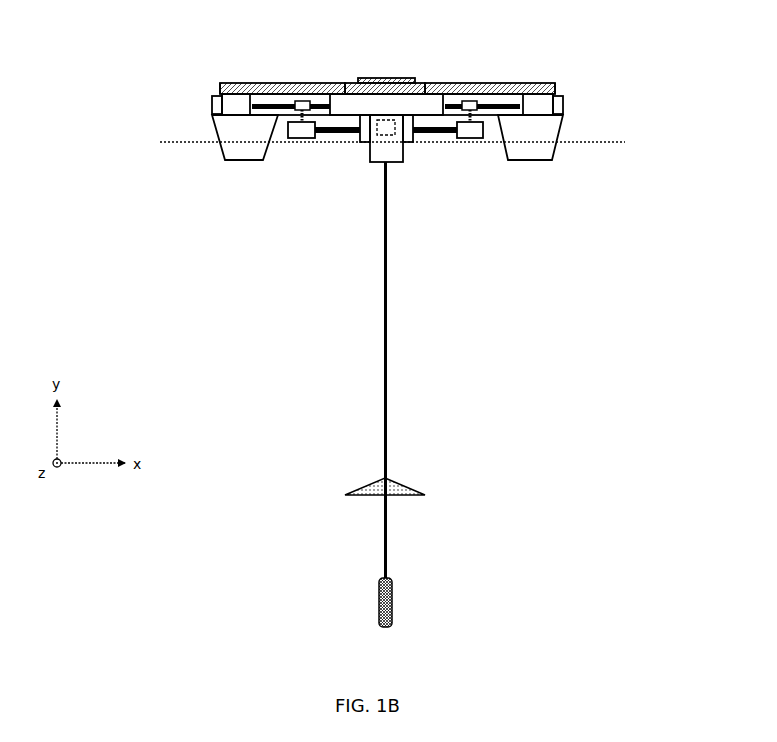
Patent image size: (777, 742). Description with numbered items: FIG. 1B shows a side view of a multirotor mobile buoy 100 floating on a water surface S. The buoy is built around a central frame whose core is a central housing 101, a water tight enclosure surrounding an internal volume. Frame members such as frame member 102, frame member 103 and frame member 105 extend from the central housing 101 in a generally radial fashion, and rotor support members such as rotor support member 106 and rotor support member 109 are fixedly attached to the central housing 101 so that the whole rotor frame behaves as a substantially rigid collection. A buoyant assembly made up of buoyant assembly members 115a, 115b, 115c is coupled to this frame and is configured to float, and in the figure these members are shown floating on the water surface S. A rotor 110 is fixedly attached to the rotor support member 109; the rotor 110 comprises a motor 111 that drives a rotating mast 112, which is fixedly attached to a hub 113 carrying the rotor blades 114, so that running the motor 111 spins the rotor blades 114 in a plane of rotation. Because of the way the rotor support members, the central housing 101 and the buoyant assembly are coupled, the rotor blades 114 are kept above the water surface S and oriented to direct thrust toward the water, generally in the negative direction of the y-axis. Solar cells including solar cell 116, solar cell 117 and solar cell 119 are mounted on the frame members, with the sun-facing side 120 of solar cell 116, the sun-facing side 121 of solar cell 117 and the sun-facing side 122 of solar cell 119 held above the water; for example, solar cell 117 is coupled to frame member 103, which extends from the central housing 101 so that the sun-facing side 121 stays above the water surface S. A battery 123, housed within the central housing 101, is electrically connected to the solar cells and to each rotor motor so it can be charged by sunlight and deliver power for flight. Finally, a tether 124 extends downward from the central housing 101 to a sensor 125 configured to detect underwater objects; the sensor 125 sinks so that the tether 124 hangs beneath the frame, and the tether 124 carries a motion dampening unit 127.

The multirotor mobile buoy 100 is at (228, 318).
The central housing 101 is at (365, 145).
The frame member 102 is at (380, 103).
The frame member 103 is at (565, 109).
The frame member 105 is at (212, 100).
The rotor support member 106 is at (432, 131).
The rotor support member 109 is at (345, 133).
The rotor 110 is at (297, 190).
The motor 111 is at (300, 140).
The rotating mast 112 is at (290, 120).
The hub 113 is at (302, 100).
The rotor blades 114 is at (282, 97).
The buoyant assembly member 115a is at (390, 158).
The buoyant assembly member 115b is at (537, 148).
The buoyant assembly member 115c is at (228, 158).
The solar cell 116 is at (418, 77).
The solar cell 117 is at (557, 84).
The solar cell 119 is at (220, 90).
The sun-facing side 120 is at (422, 78).
The sun-facing side 121 is at (510, 80).
The sun-facing side 122 is at (250, 82).
The battery 123 is at (403, 140).
The tether 124 is at (389, 282).
The sensor 125 is at (391, 597).
The motion dampening unit 127 is at (398, 481).
The water surface S is at (585, 140).